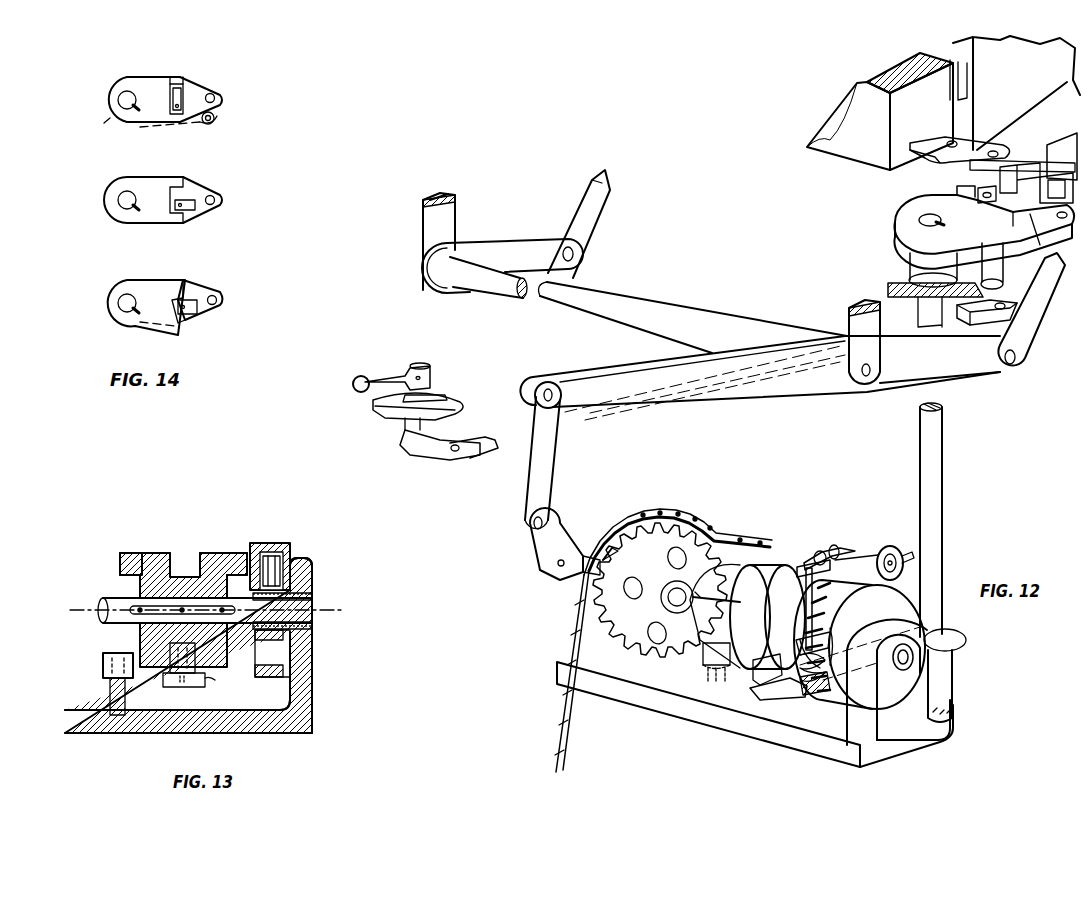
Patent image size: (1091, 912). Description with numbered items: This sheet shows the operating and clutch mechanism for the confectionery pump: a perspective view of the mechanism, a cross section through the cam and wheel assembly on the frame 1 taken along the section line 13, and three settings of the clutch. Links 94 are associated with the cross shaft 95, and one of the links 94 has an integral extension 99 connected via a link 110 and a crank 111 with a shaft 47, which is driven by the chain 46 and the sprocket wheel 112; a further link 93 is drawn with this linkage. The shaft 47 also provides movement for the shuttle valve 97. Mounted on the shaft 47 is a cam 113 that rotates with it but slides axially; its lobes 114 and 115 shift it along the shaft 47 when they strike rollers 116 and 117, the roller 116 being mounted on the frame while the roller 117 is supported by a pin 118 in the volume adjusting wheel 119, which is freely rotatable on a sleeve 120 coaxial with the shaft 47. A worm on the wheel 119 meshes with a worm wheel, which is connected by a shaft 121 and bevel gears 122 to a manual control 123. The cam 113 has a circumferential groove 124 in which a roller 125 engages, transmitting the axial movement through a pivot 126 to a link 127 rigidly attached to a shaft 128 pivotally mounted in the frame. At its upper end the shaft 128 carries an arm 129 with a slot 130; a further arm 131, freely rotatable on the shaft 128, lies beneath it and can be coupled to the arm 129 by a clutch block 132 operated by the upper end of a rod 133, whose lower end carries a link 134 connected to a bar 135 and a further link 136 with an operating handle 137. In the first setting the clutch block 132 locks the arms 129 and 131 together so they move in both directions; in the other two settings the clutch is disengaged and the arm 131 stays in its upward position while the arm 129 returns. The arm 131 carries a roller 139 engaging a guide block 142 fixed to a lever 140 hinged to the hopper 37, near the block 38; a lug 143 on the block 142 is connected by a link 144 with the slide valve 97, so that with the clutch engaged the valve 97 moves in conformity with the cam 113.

In FIG. 13, the frame 1 is at (312, 692).
In FIG. 12, the frame 1 is at (895, 283).
In FIG. 12, the shaft section line 13 is at (722, 590).
In FIG. 12, the hopper 37 is at (1022, 62).
In FIG. 12, the block 38 is at (850, 105).
In FIG. 12, the chain 46 is at (560, 726).
In FIG. 13, the shaft 47 is at (110, 600).
In FIG. 12, the shaft 47 is at (904, 672).
In FIG. 12, the link 93 is at (600, 215).
In FIG. 12, the links 94 is at (525, 243).
In FIG. 12, the cross shaft 95 is at (672, 312).
In FIG. 12, the shuttle valve 97 is at (940, 158).
In FIG. 12, the extension 99 is at (765, 392).
In FIG. 12, the link 110 is at (552, 460).
In FIG. 12, the crank 111 is at (535, 562).
In FIG. 12, the sprocket wheel 112 is at (655, 565).
In FIG. 13, the cam 113 is at (160, 553).
In FIG. 12, the cam 113 is at (738, 570).
In FIG. 13, the lobe 114 is at (128, 553).
In FIG. 12, the lobe 114 is at (710, 590).
In FIG. 13, the lobe 115 is at (235, 553).
In FIG. 12, the lobe 115 is at (797, 624).
In FIG. 13, the roller 116 is at (103, 663).
In FIG. 12, the roller 116 is at (703, 670).
In FIG. 13, the roller 117 is at (255, 550).
In FIG. 13, the pin 118 is at (272, 556).
In FIG. 13, the volume adjusting wheel 119 is at (300, 560).
In FIG. 12, the volume adjusting wheel 119 is at (895, 607).
In FIG. 13, the sleeve 120 is at (295, 590).
In FIG. 12, the sleeve 120 is at (812, 698).
In FIG. 12, the shaft 121 is at (813, 576).
In FIG. 12, the bevel gears 122 is at (805, 552).
In FIG. 12, the manual control 123 is at (893, 548).
In FIG. 13, the circumferential groove 124 is at (178, 568).
In FIG. 13, the roller 125 is at (165, 668).
In FIG. 12, the roller 125 is at (748, 680).
In FIG. 13, the pivot 126 is at (188, 687).
In FIG. 13, the link 127 is at (205, 680).
In FIG. 12, the link 127 is at (780, 700).
In FIG. 14, the shaft 128 is at (120, 115).
In FIG. 12, the shaft 128 is at (942, 455).
In FIG. 14, the arm 129 is at (160, 77).
In FIG. 12, the arm 129 is at (915, 212).
In FIG. 14, the slot 130 is at (178, 84).
In FIG. 12, the slot 130 is at (968, 186).
In FIG. 14, the arm 131 is at (216, 96).
In FIG. 12, the arm 131 is at (1040, 238).
In FIG. 14, the clutch block 132 is at (182, 98).
In FIG. 12, the clutch block 132 is at (988, 187).
In FIG. 12, the rod 133 is at (1000, 285).
In FIG. 12, the link 134 is at (1005, 325).
In FIG. 12, the bar 135 is at (488, 453).
In FIG. 12, the link 136 is at (428, 450).
In FIG. 12, the operating handle 137 is at (393, 372).
In FIG. 14, the roller 139 is at (212, 103).
In FIG. 12, the roller 139 is at (1060, 236).
In FIG. 12, the lever 140 is at (1070, 140).
In FIG. 12, the guide block 142 is at (1050, 172).
In FIG. 12, the lug 143 is at (985, 168).
In FIG. 12, the link 144 is at (985, 143).